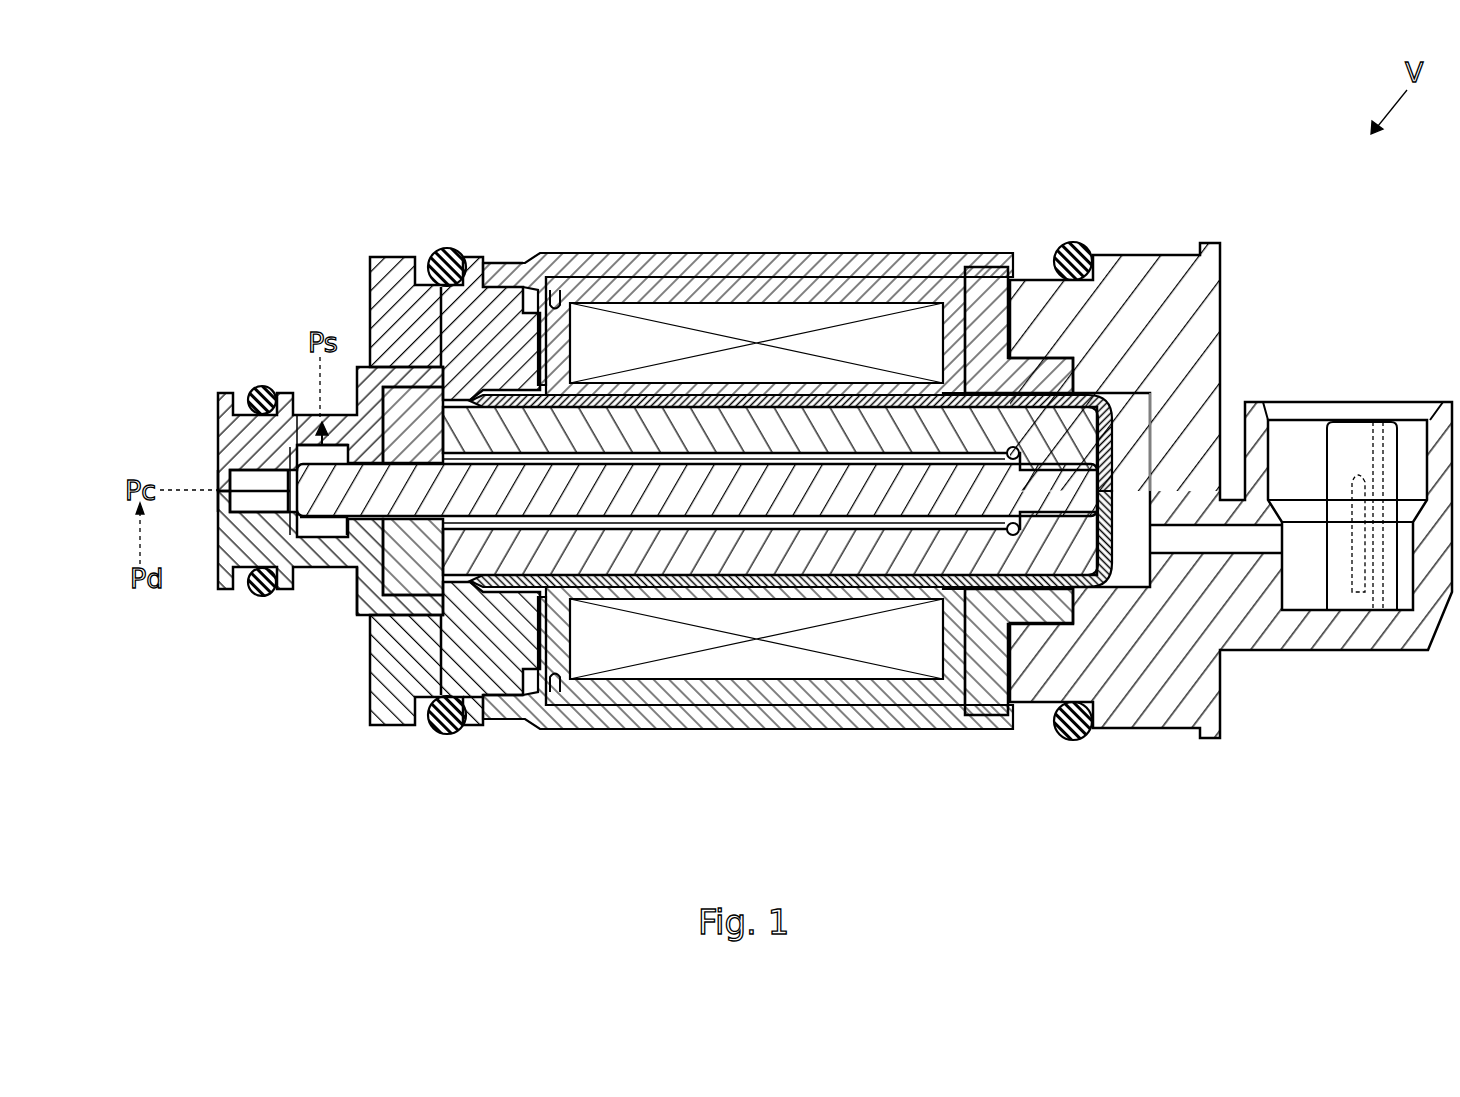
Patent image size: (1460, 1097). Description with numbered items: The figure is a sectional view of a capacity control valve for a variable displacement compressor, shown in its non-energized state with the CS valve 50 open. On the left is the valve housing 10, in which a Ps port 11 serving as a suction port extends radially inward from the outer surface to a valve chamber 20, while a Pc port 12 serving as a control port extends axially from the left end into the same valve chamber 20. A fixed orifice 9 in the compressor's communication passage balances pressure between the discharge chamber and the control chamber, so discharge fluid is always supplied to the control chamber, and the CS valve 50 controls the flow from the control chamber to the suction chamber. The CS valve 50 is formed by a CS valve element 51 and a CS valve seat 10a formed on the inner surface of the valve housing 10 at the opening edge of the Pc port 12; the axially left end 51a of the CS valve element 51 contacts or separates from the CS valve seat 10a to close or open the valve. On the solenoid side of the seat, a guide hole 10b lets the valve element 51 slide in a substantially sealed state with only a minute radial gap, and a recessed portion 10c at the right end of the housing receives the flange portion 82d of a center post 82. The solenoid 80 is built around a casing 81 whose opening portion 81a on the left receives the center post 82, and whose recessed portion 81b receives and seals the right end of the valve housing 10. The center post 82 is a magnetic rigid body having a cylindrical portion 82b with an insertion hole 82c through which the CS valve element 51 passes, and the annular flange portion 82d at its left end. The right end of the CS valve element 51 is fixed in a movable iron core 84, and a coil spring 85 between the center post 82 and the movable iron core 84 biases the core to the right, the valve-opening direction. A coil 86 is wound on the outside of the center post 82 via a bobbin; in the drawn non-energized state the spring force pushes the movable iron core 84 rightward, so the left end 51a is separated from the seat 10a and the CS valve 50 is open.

The fixed orifice 9 is at (140, 548).
The valve housing 10 is at (228, 378).
The CS valve seat 10a is at (275, 485).
The guide hole 10b is at (345, 555).
The recessed portion 10c is at (358, 578).
The Ps port 11 is at (300, 413).
The Pc port 12 is at (222, 458).
The valve chamber 20 is at (335, 462).
The CS valve 50 is at (125, 683).
The CS valve element 51 is at (402, 455).
The axially left end 51a is at (283, 545).
The solenoid 80 is at (1148, 248).
The casing 81 is at (405, 738).
The opening portion 81a is at (482, 690).
The recessed portion 81b is at (476, 718).
The center post 82 is at (660, 398).
The cylindrical portion 82b is at (580, 437).
The insertion hole 82c is at (550, 292).
The flange portion 82d is at (432, 375).
The movable iron core 84 is at (1035, 590).
The coil spring 85 is at (877, 572).
The coil 86 is at (805, 632).